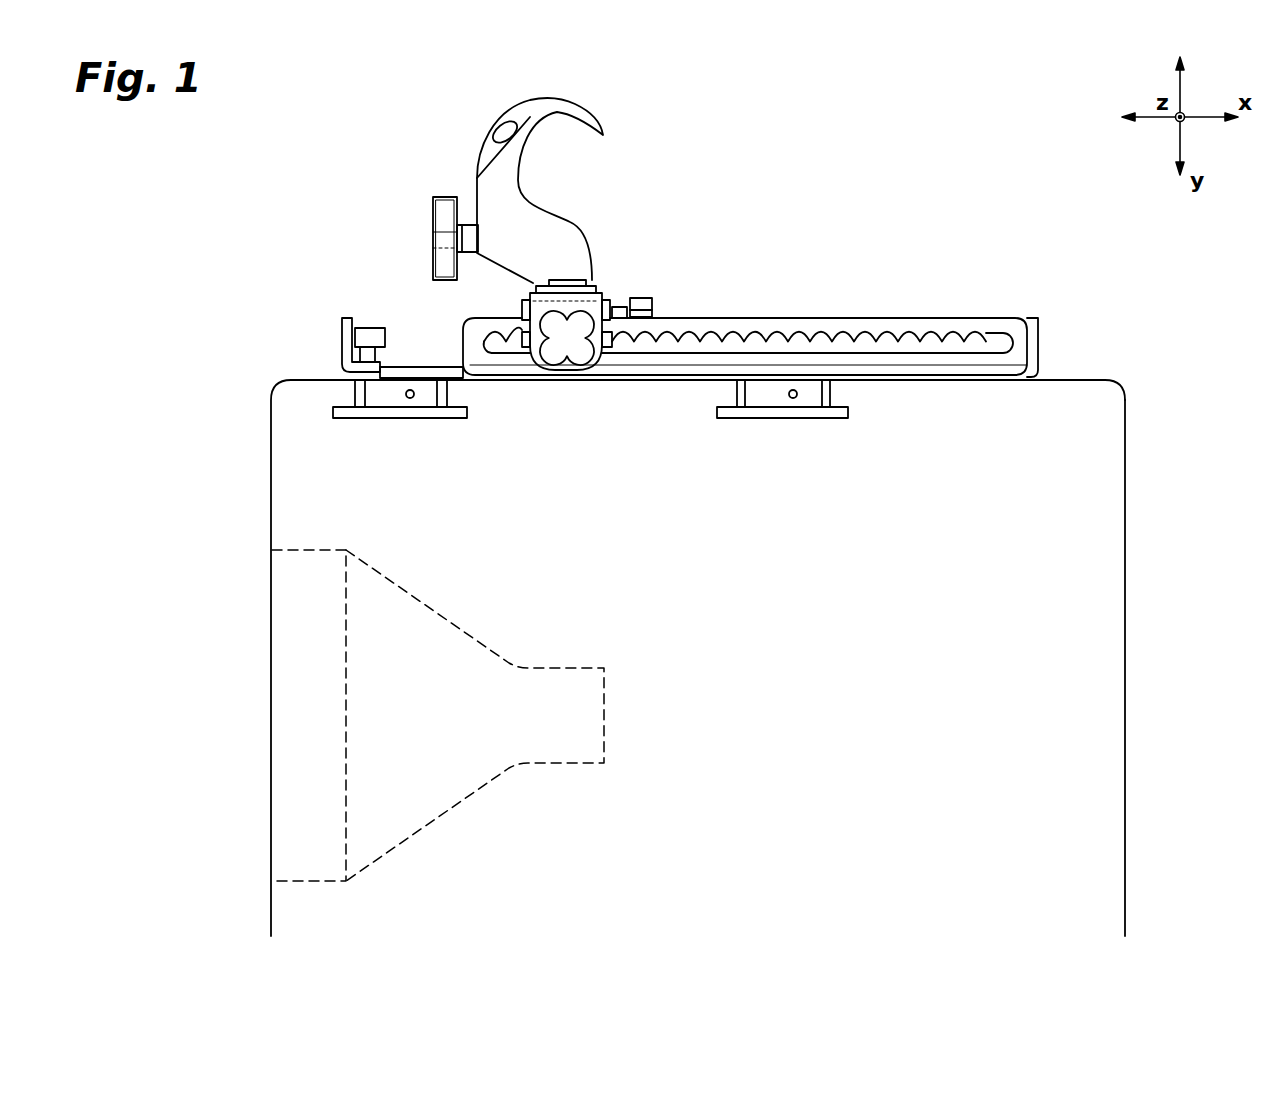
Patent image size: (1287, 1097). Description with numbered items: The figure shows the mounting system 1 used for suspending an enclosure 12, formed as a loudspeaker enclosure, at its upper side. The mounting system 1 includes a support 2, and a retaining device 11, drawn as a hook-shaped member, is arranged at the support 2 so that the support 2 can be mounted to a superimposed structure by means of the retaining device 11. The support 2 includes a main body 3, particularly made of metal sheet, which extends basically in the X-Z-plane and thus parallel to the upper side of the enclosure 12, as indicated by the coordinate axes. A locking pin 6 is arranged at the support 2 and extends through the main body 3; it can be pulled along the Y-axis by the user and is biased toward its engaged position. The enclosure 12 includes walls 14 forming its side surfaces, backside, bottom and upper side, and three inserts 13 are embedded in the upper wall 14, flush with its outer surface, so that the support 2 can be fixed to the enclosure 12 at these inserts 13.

The mounting system 1 is at (872, 186).
The support 2 is at (745, 325).
The main body 3 is at (447, 367).
The locking pin 6 is at (368, 320).
The retaining device 11 is at (558, 112).
The enclosure 12 is at (769, 622).
The inserts 13 is at (425, 418).
The walls 14 is at (1108, 382).